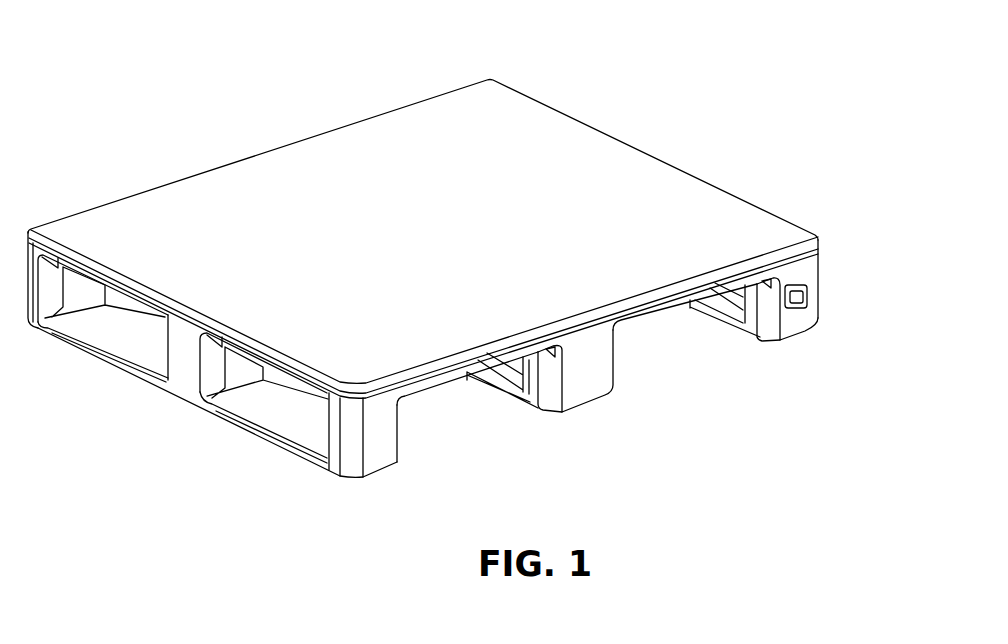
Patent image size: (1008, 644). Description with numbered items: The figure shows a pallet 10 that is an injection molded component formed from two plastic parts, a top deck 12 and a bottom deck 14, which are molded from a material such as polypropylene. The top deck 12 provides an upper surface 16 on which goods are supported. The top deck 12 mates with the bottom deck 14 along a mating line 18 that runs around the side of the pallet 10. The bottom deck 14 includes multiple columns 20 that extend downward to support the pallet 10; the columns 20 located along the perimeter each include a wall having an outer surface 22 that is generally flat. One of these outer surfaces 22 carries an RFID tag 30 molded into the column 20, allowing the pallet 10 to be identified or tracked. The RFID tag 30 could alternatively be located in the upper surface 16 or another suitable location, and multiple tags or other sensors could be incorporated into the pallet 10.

The pallet 10 is at (271, 63).
The top deck 12 is at (94, 193).
The bottom deck 14 is at (358, 490).
The upper surface 16 is at (635, 163).
The mating line 18 is at (818, 263).
The columns 20 is at (797, 322).
The outer surface 22 is at (800, 272).
The RFID tag 30 is at (807, 304).